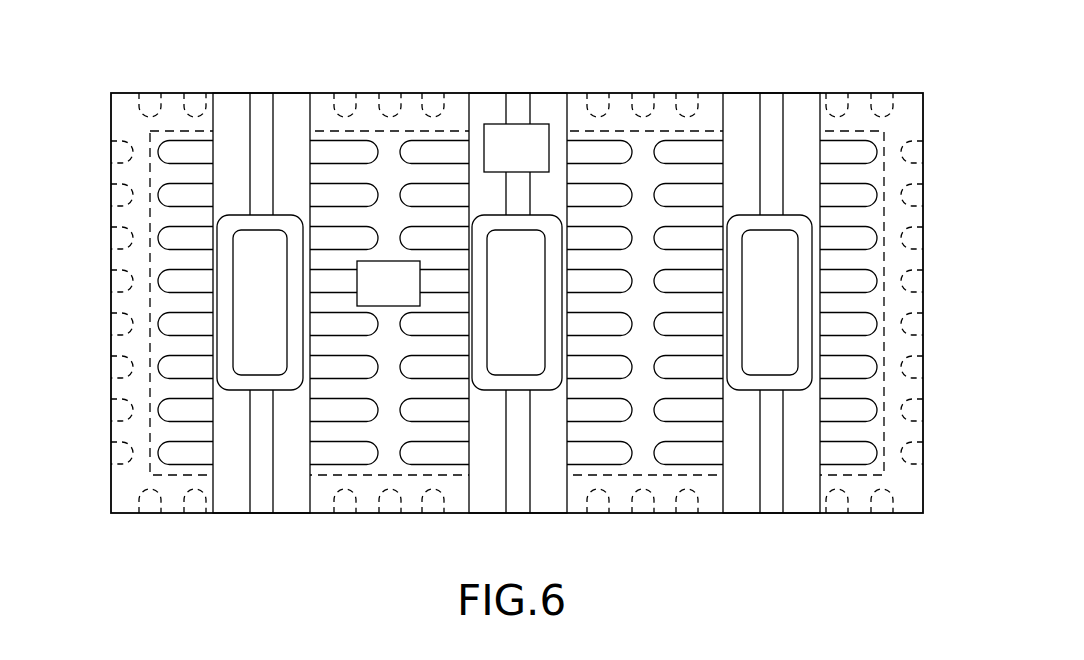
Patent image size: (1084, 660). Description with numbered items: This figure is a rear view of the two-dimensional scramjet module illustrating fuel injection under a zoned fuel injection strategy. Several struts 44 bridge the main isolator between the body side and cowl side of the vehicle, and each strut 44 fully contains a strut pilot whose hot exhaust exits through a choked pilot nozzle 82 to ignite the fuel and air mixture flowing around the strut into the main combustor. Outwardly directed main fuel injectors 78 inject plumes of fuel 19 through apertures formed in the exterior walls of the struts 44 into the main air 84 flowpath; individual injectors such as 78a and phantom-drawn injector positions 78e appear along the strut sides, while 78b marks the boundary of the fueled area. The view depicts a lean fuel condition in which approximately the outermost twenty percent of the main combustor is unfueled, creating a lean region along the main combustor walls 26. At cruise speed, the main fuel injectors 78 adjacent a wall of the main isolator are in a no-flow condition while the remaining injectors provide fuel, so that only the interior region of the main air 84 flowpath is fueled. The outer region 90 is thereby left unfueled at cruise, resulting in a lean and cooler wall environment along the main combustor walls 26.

The outer region 90 is at (322, 102).
The phantom edge slots 78e is at (392, 102).
The main combustor walls 26 is at (688, 104).
The strut 44 is at (502, 162).
The main air 84 is at (374, 297).
The pilot nozzle 82 is at (501, 314).
The main fuel injectors 78 is at (307, 453).
The slot 78a is at (352, 458).
The slot boundary 78b is at (430, 475).
The fuel 19 is at (598, 368).